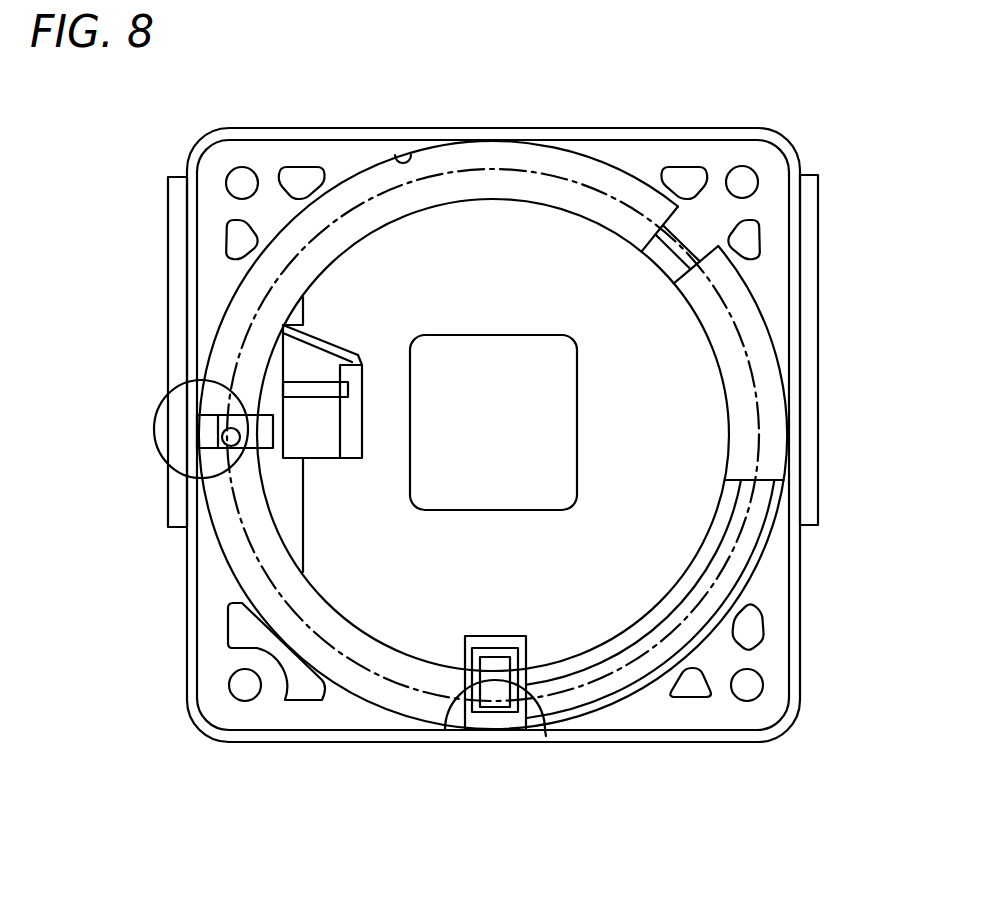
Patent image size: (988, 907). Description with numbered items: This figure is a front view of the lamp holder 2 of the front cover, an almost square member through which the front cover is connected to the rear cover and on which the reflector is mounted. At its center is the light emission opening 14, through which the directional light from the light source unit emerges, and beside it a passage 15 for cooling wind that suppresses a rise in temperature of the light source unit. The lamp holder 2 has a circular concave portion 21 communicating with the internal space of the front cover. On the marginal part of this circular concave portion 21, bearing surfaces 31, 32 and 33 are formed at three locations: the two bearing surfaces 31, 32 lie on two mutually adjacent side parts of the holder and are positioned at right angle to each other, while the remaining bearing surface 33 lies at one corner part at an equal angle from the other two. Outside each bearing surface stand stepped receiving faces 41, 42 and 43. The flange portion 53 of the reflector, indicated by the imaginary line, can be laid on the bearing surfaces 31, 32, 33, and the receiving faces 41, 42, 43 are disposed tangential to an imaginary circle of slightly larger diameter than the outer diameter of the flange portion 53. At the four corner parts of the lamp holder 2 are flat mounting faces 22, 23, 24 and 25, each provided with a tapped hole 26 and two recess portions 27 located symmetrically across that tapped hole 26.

The lamp holder 2 is at (607, 128).
The light emission opening 14 is at (578, 450).
The passage 15 is at (317, 418).
The circular concave portion 21 is at (405, 150).
The mounting face 22 is at (796, 156).
The mounting face 23 is at (222, 208).
The mounting face 24 is at (272, 695).
The mounting face 25 is at (764, 660).
The tapped hole 26 is at (227, 175).
The recess portion 27 is at (303, 166).
The bearing surface 31 is at (198, 380).
The bearing surface 32 is at (483, 678).
The bearing surface 33 is at (680, 280).
The receiving face 41 is at (196, 477).
The receiving face 42 is at (525, 690).
The receiving face 43 is at (672, 264).
The flange portion 53 is at (477, 168).